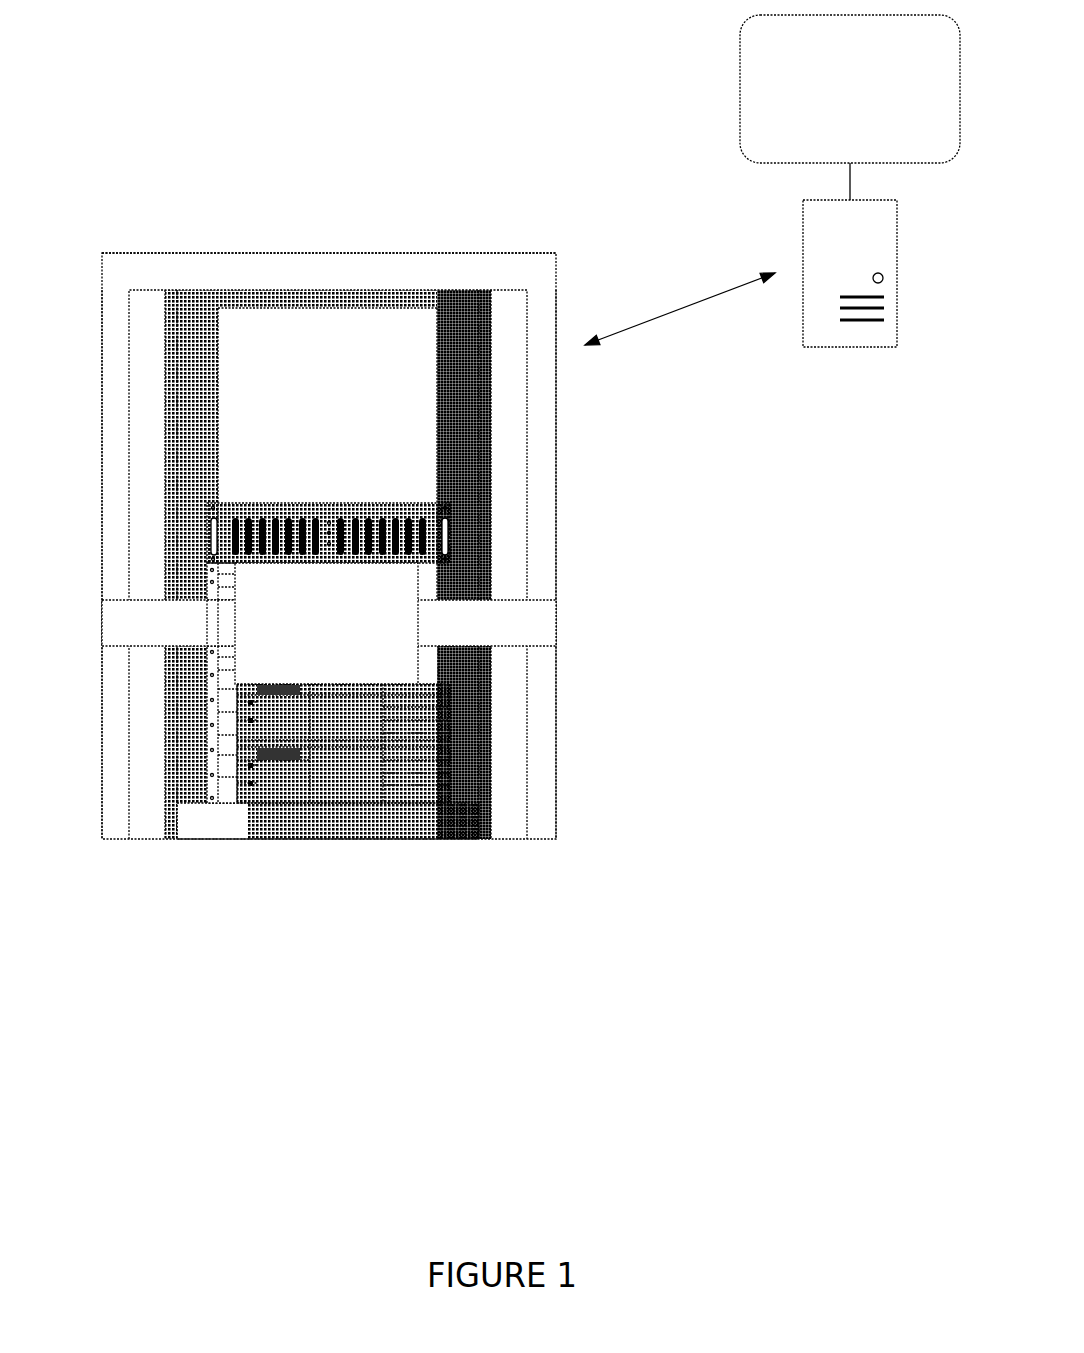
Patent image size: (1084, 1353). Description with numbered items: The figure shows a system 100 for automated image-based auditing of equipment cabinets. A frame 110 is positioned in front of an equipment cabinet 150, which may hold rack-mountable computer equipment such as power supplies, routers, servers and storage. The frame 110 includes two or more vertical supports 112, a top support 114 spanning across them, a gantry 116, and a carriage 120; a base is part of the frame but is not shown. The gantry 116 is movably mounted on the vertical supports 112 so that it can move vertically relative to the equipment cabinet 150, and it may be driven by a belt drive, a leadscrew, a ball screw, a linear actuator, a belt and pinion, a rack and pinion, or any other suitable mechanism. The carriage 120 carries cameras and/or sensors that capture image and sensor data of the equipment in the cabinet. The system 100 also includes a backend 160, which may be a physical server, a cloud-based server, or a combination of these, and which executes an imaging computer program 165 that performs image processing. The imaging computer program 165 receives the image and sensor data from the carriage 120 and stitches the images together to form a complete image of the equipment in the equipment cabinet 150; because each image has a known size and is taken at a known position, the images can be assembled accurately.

The system 100 is at (501, 565).
The frame 110 is at (557, 713).
The vertical supports 112 is at (120, 512).
The top support 114 is at (422, 267).
The gantry 116 is at (528, 612).
The carriage 120 is at (328, 593).
The equipment cabinet 150 is at (337, 823).
The backend 160 is at (741, 300).
The imaging computer program 165 is at (850, 107).